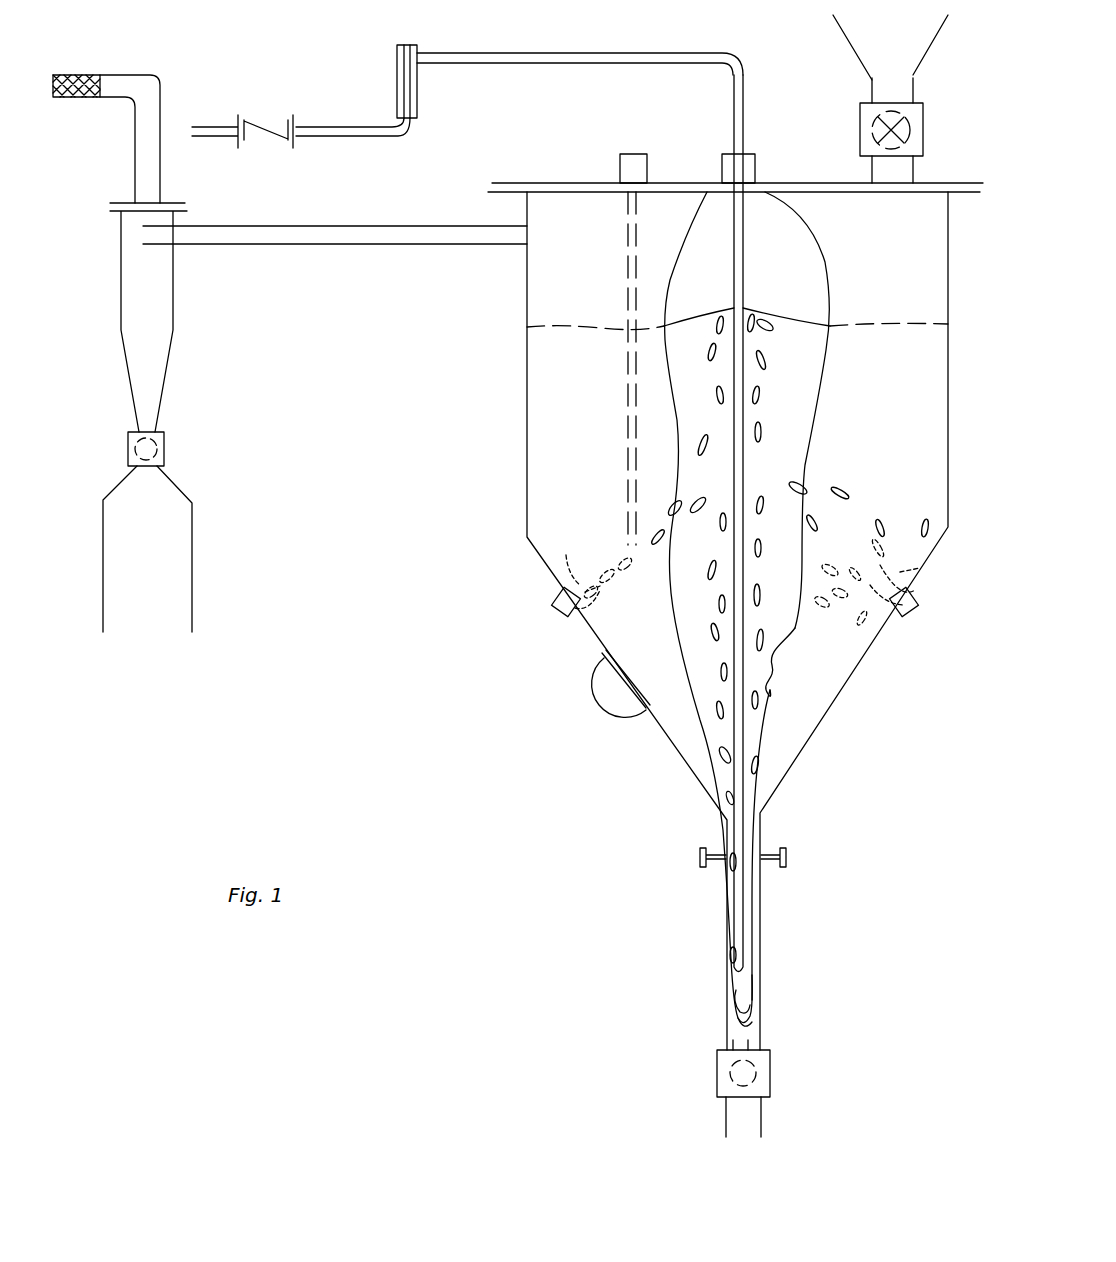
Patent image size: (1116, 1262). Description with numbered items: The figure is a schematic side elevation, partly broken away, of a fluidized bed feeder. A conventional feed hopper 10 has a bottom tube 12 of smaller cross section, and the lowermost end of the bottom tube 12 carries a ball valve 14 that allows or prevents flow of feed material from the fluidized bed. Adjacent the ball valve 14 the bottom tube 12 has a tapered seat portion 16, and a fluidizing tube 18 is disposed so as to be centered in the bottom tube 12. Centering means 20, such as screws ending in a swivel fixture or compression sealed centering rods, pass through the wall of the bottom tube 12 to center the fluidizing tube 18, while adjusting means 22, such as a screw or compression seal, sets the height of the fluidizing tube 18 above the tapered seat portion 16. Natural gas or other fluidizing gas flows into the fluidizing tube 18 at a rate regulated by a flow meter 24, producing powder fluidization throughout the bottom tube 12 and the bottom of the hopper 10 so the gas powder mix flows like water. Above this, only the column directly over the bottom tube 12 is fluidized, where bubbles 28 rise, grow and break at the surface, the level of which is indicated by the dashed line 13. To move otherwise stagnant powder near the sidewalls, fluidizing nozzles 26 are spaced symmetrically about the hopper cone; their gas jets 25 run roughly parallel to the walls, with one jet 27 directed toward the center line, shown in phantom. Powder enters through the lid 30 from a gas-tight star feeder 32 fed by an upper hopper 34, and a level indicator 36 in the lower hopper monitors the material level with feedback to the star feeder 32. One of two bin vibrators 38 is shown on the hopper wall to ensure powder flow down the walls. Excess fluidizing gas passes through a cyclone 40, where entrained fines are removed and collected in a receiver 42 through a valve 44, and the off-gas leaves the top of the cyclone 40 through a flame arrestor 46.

The feed hopper 10 is at (518, 441).
The bottom tube 12 is at (760, 940).
The liquid level 13 is at (523, 325).
The ball valve 14 is at (773, 1068).
The tapered seat portion 16 is at (756, 1026).
The fluidizing tube 18 is at (763, 898).
The centering means 20 is at (697, 858).
The adjusting means 22 is at (757, 170).
The flow meter 24 is at (397, 68).
The gas jets 25 is at (942, 596).
The fluidizing nozzles 26 is at (555, 590).
The jet 27 is at (598, 592).
The bubbles 28 is at (771, 690).
The lid 30 is at (925, 181).
The star feeder 32 is at (858, 122).
The upper hopper 34 is at (838, 32).
The level indicator 36 is at (617, 165).
The bin vibrators 38 is at (602, 695).
The cyclone 40 is at (175, 288).
The receiver 42 is at (194, 543).
The valve 44 is at (170, 449).
The flame arrestor 46 is at (78, 72).